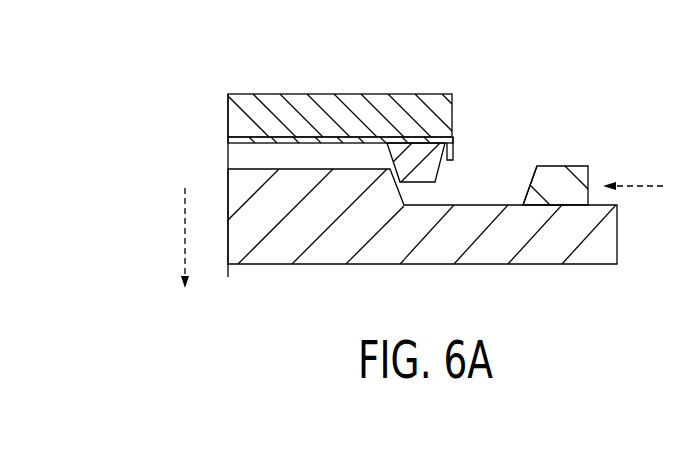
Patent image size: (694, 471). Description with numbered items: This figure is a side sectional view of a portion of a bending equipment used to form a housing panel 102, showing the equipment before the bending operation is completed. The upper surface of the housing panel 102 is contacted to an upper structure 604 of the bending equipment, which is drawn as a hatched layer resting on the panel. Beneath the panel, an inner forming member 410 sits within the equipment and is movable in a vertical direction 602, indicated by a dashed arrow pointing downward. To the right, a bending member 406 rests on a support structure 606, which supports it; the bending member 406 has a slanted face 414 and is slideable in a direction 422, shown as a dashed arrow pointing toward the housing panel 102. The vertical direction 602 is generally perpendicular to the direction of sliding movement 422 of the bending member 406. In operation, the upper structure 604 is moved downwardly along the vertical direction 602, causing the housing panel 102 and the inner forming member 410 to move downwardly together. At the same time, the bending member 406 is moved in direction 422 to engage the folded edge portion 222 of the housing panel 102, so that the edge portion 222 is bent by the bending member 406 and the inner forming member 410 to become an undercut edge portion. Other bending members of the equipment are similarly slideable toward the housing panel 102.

The housing panel 102 is at (303, 147).
The folded edge portion 222 is at (453, 148).
The bending member 406 is at (560, 183).
The inner forming member 410 is at (425, 168).
The slanted face 414 is at (528, 185).
The direction 422 is at (647, 187).
The vertical direction 602 is at (183, 232).
The upper structure 604 is at (350, 107).
The support structure 606 is at (383, 255).